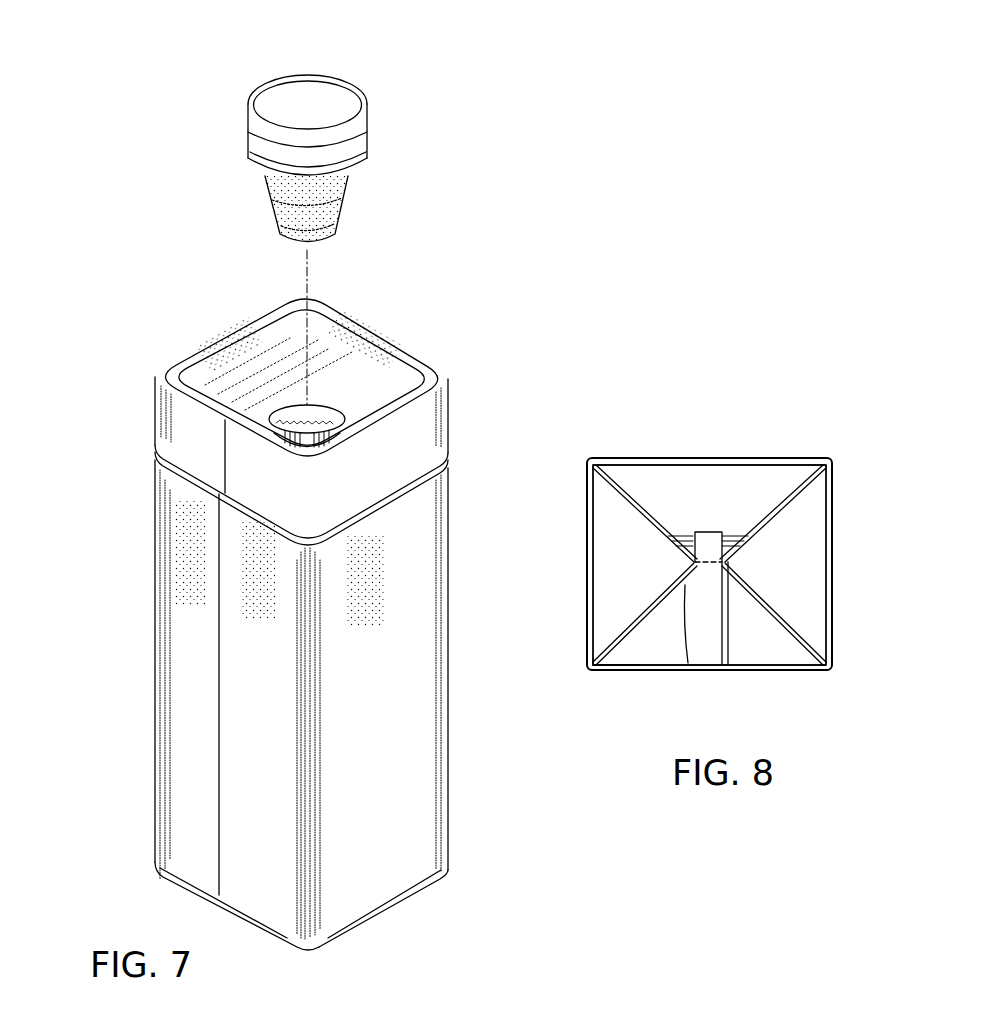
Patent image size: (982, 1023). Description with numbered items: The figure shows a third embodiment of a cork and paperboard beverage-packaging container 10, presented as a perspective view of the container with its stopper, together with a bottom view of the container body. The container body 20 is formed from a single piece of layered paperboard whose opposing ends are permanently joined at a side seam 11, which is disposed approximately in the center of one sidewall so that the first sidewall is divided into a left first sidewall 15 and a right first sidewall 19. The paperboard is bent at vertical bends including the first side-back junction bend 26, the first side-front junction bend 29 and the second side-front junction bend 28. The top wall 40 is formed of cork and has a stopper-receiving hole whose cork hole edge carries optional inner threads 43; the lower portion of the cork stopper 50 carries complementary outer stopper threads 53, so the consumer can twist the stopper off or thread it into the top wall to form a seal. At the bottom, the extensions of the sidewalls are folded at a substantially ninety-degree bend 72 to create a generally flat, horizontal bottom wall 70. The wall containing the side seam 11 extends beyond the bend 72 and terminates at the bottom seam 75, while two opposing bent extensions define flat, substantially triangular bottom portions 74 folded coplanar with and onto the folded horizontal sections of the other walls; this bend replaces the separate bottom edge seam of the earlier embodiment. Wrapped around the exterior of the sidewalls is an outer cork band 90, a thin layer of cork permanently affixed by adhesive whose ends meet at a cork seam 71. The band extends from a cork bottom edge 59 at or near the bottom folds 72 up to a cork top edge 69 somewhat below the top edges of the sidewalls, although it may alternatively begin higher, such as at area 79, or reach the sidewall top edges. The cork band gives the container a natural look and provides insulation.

In FIG. 7, the container assembly 10 is at (133, 95).
In FIG. 7, the cork stopper 50 is at (402, 162).
In FIG. 7, the stopper threads 53 is at (345, 195).
In FIG. 7, the top wall 40 is at (399, 326).
In FIG. 7, the threads 43 is at (340, 417).
In FIG. 7, the cork top edge 69 is at (383, 496).
In FIG. 7, the left first sidewall 15 is at (165, 417).
In FIG. 7, the side seam 11 is at (227, 470).
In FIG. 8, the side seam 11 is at (707, 585).
In FIG. 7, the container body 20 is at (118, 564).
In FIG. 7, the first side-back junction bend 26 is at (155, 783).
In FIG. 7, the second side-front junction bend 28 is at (448, 812).
In FIG. 7, the cork bottom edge 59 is at (265, 935).
In FIG. 8, the cork bottom edge 59 is at (620, 667).
In FIG. 7, the ninety-degree bend 72 is at (397, 907).
In FIG. 8, the ninety-degree bend 72 is at (758, 465).
In FIG. 7, the cork seam 71 is at (221, 716).
In FIG. 7, the first side-front junction bend 29 is at (307, 865).
In FIG. 7, the area 79 is at (408, 827).
In FIG. 7, the outer cork band 90 is at (170, 506).
In FIG. 7, the right first sidewall 19 is at (277, 505).
In FIG. 8, the bottom wall 70 is at (566, 626).
In FIG. 8, the triangular bottom portions 74 is at (618, 556).
In FIG. 8, the bottom seam 75 is at (708, 547).